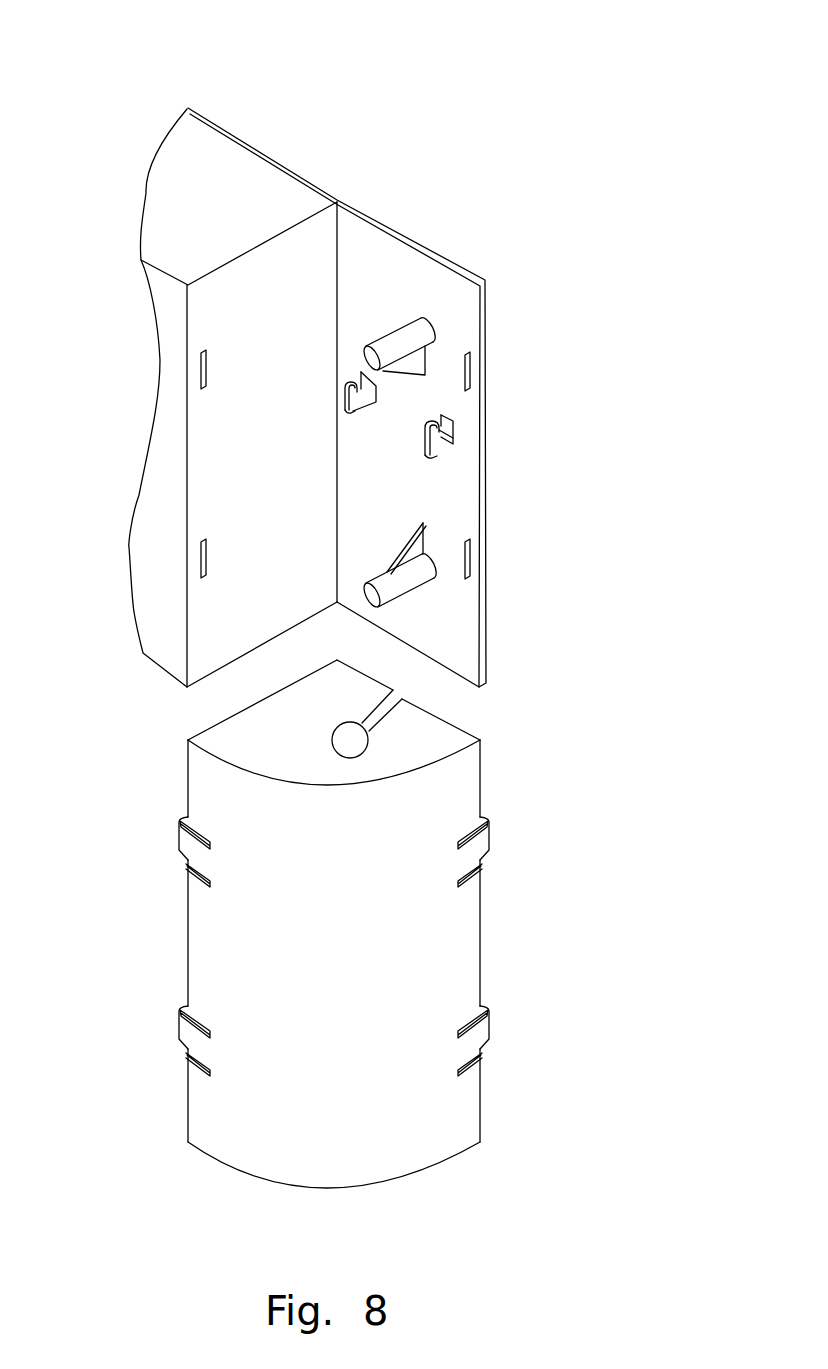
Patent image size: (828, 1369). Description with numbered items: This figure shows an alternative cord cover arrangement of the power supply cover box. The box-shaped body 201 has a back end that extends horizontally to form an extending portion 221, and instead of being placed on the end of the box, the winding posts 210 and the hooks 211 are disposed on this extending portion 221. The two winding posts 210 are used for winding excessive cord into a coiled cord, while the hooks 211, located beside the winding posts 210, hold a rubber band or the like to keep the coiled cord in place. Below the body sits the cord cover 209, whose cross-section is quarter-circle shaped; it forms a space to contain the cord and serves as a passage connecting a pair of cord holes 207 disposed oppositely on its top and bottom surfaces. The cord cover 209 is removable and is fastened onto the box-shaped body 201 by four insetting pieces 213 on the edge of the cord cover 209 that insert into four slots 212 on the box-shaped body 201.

The box-shaped body 201 is at (315, 165).
The extending portions 221 is at (409, 277).
The winding posts 210 is at (412, 337).
The hooks 211 is at (437, 448).
The slots 212 is at (468, 558).
The cord holes 207 is at (352, 740).
The cord cover 209 is at (462, 945).
The insetting pieces 213 is at (485, 837).